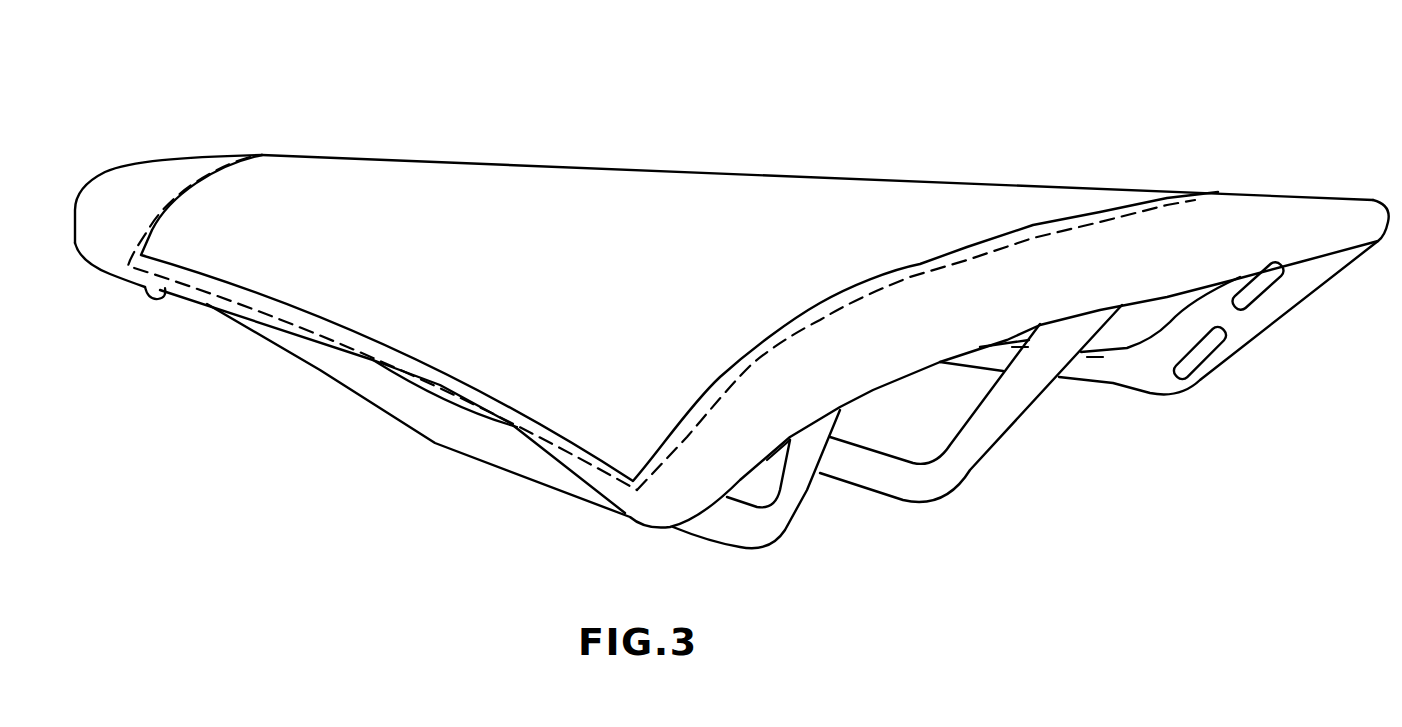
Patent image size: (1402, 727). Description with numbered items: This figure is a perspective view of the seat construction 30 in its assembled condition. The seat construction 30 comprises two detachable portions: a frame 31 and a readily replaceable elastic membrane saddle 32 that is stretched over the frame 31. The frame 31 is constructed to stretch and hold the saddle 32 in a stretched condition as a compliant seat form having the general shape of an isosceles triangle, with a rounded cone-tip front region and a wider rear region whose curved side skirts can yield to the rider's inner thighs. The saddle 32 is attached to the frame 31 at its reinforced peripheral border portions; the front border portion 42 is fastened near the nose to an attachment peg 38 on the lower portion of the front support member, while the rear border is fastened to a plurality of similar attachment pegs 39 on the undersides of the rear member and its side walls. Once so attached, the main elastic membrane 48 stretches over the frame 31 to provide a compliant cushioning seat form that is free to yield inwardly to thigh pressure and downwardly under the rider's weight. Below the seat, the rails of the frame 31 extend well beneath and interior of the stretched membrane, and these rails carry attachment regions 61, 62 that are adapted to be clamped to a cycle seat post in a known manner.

The seat construction 30 is at (722, 133).
The frame 31 is at (1025, 428).
The elastic membrane saddle 32 is at (892, 198).
The attachment peg 38 is at (143, 297).
The attachment pegs 39 is at (1257, 290).
The front border portion 42 is at (123, 196).
The main elastic membrane 48 is at (513, 240).
The attachment region 61 is at (867, 473).
The attachment region 62 is at (533, 460).